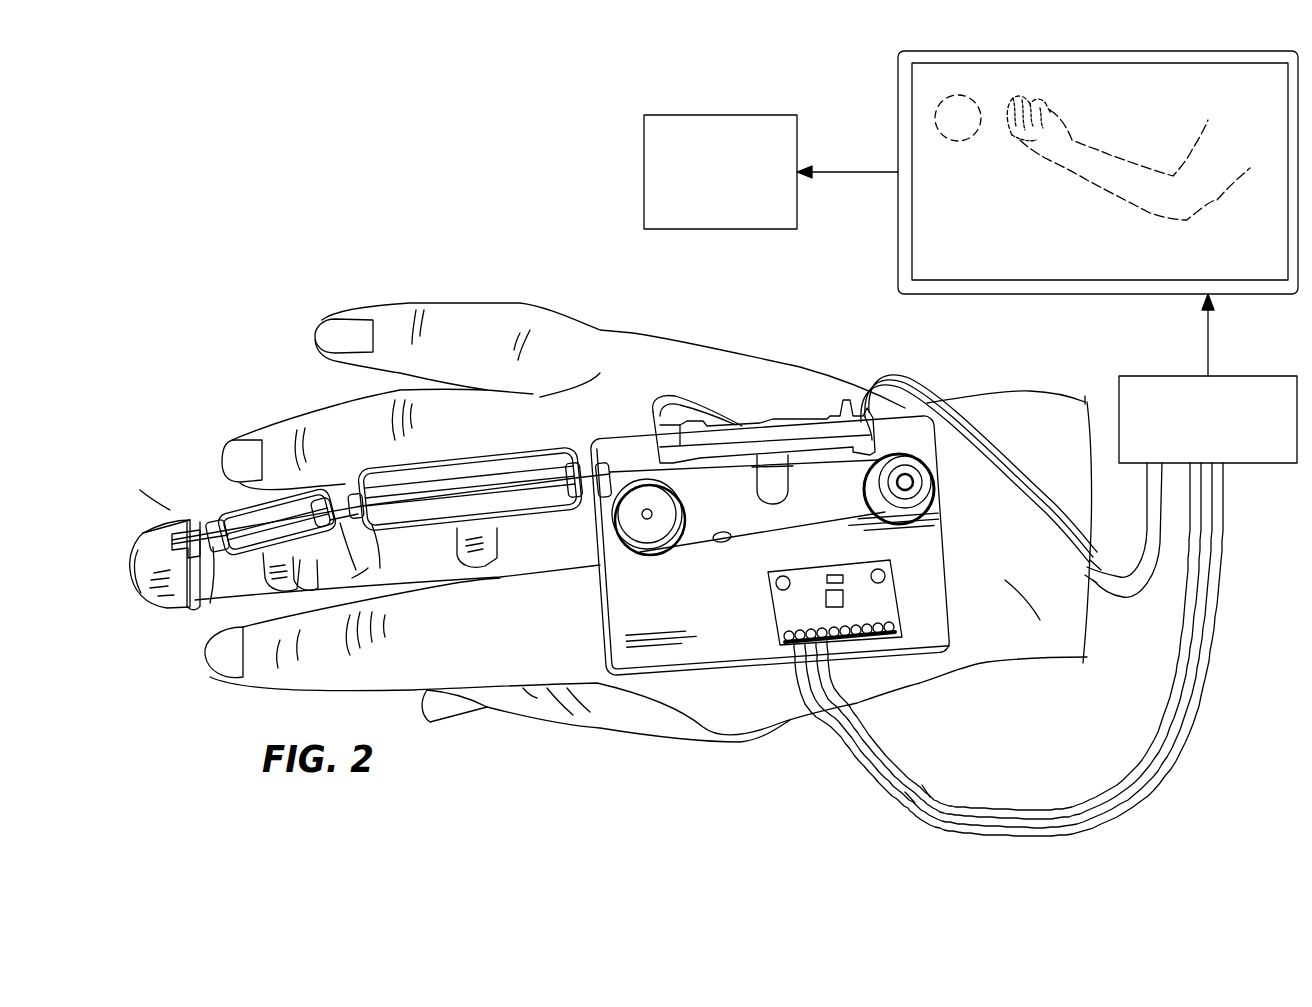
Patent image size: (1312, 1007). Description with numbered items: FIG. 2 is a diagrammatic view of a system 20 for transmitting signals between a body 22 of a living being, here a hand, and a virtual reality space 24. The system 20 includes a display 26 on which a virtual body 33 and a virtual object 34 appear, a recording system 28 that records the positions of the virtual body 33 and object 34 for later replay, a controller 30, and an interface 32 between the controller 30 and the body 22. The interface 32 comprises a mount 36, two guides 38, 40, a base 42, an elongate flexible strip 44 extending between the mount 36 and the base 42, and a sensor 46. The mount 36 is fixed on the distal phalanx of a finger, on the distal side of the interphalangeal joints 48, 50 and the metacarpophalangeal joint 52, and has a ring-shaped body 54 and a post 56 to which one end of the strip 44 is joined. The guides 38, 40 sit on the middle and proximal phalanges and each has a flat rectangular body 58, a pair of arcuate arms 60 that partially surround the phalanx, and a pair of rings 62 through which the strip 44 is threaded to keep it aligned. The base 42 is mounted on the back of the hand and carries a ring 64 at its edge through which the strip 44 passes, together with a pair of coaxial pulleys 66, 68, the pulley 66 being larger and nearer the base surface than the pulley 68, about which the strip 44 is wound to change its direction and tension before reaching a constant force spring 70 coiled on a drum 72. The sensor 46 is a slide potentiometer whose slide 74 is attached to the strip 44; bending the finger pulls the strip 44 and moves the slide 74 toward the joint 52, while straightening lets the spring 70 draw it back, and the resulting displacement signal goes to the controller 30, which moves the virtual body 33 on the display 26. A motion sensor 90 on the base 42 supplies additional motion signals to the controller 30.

The system 20 is at (469, 203).
The body 22 is at (1027, 640).
The virtual reality space 24 is at (1085, 250).
The display 26 is at (944, 208).
The recording system 28 is at (660, 124).
The controller 30 is at (1270, 466).
The interface 32 is at (814, 354).
The virtual body 33 is at (1217, 198).
The virtual object 34 is at (934, 115).
The mount 36 is at (170, 595).
The guide 38 is at (243, 513).
The guide 40 is at (406, 490).
The base 42 is at (658, 653).
The strip 44 is at (509, 480).
The sensor 46 is at (740, 428).
The interphalangeal joint 48 is at (222, 595).
The interphalangeal joint 50 is at (357, 560).
The metacarpophalangeal joint 52 is at (530, 545).
The ring-shaped body 54 is at (155, 553).
The post 56 is at (188, 525).
The body 58 is at (467, 476).
The arcuate arms 60 is at (474, 588).
The rings 62 is at (362, 494).
The ring 64 is at (600, 500).
The pulley 66 is at (934, 488).
The pulley 68 is at (907, 472).
The spring 70 is at (698, 541).
The drum 72 is at (640, 500).
The slide 74 is at (790, 482).
The motion sensor 90 is at (877, 605).